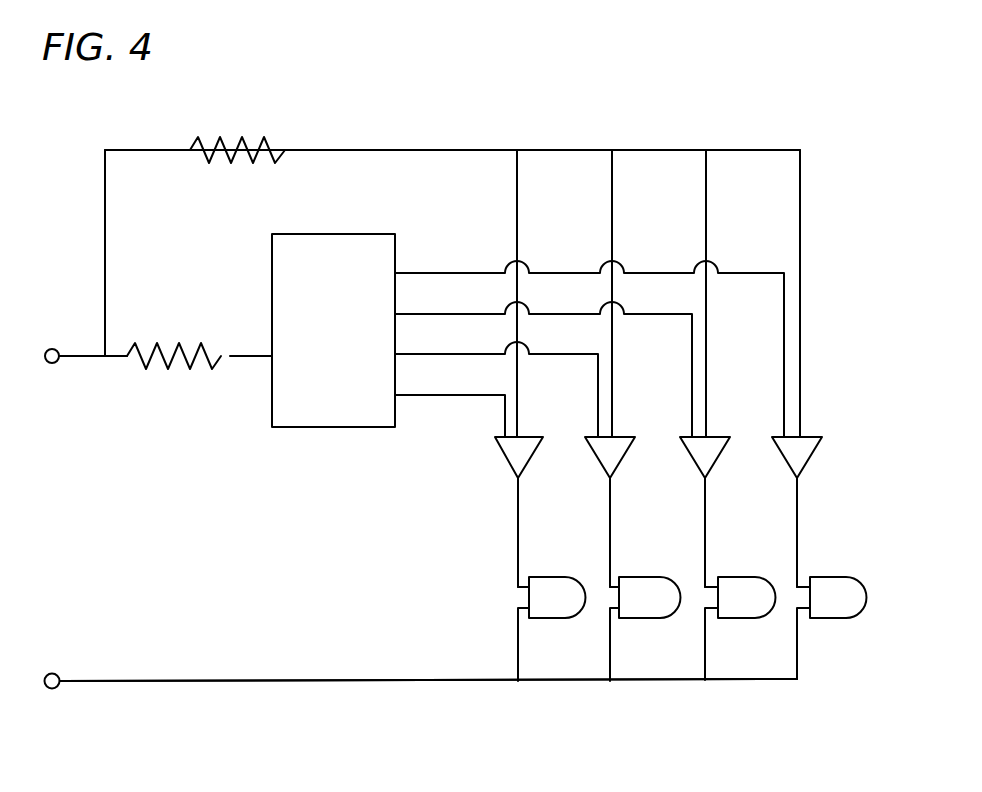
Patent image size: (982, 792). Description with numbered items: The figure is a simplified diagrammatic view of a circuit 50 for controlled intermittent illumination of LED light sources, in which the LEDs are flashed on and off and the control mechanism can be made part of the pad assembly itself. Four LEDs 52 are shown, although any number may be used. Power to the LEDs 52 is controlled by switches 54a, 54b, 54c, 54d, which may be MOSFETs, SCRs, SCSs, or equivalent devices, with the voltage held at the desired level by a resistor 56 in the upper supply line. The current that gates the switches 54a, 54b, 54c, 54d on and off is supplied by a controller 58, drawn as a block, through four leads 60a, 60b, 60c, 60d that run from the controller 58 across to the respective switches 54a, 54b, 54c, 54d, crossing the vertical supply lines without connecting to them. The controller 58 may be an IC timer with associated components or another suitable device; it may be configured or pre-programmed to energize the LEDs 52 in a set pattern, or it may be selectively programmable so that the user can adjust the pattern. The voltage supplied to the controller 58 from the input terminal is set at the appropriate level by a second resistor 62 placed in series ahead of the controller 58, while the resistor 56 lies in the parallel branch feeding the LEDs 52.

The circuit 50 is at (465, 113).
The LEDs 52 is at (550, 577).
The switch 54a is at (503, 455).
The switch 54b is at (595, 455).
The switch 54c is at (691, 455).
The switch 54d is at (781, 457).
The resistor 56 is at (250, 148).
The controller 58 is at (333, 330).
The lead 60a is at (420, 395).
The lead 60b is at (425, 354).
The lead 60c is at (425, 314).
The lead 60d is at (428, 273).
The second resistor 62 is at (173, 358).